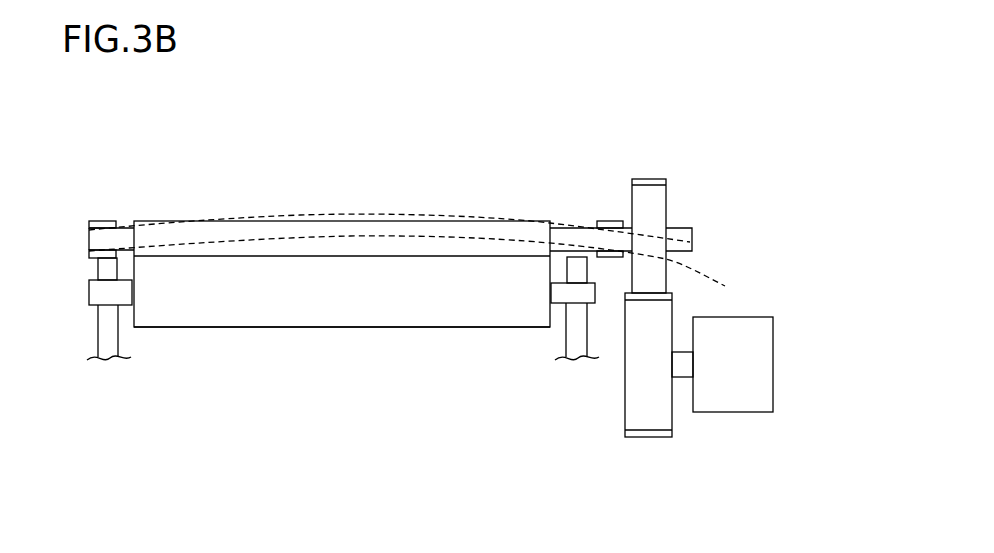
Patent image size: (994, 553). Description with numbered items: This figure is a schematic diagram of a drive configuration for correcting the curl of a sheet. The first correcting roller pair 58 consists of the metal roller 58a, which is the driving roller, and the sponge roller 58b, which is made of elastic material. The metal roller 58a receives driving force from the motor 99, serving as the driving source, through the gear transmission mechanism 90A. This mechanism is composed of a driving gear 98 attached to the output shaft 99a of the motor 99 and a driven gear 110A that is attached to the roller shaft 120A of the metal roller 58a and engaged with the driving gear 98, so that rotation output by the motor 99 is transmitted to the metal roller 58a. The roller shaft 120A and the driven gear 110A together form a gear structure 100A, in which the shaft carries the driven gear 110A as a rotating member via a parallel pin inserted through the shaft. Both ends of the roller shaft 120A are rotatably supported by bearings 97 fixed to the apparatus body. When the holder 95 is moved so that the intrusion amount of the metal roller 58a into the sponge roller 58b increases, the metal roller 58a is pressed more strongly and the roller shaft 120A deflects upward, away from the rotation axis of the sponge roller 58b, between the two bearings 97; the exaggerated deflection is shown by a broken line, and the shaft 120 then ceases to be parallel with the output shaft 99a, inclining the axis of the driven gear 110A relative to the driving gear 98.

The first correcting roller pair 58 is at (352, 199).
The metal roller 58a is at (258, 218).
The sponge roller 58b is at (328, 328).
The shaft 120 is at (463, 214).
The roller shaft 120A is at (683, 228).
The bearings 97 is at (103, 220).
The holder 95 is at (96, 330).
The gear transmission mechanism 90A is at (689, 299).
The gear structure 100A is at (667, 179).
The driven gear 110A is at (650, 193).
The driving gear 98 is at (645, 438).
The motor 99 is at (773, 362).
The output shaft 99a is at (685, 378).